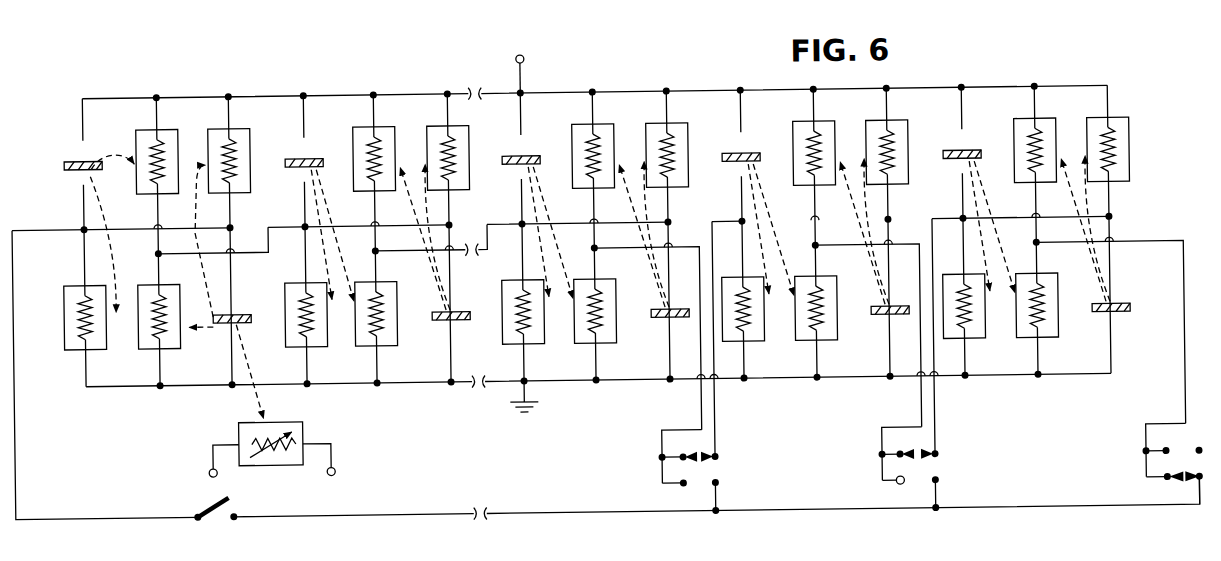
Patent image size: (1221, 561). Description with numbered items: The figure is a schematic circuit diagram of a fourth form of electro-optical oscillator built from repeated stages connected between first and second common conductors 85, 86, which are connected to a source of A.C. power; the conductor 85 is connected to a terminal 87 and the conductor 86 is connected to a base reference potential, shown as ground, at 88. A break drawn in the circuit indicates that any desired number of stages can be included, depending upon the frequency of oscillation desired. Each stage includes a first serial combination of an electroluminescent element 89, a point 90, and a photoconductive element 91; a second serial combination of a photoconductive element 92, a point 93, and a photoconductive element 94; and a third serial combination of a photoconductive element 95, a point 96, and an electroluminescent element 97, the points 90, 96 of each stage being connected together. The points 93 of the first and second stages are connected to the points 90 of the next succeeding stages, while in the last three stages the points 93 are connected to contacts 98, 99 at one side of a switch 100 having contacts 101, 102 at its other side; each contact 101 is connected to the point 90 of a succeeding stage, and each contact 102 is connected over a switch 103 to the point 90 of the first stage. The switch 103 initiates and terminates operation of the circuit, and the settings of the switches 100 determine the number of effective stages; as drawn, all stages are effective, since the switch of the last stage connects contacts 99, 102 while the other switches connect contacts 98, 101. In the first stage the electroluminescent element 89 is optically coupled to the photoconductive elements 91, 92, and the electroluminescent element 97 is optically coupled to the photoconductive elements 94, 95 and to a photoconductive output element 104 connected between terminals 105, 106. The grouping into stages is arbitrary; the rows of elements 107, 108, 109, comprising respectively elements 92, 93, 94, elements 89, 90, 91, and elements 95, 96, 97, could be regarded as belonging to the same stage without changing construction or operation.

The first common conductor 85 is at (704, 92).
The second common conductor 86 is at (412, 382).
The terminal 87 is at (528, 60).
The ground 88 is at (540, 399).
The electroluminescent element 89 is at (945, 157).
The point 90 is at (964, 223).
The photoconductive element 91 is at (959, 279).
The photoconductive element 92 is at (1021, 124).
The point 93 is at (1035, 248).
The photoconductive element 94 is at (1021, 345).
The photoconductive element 95 is at (1094, 124).
The point 96 is at (1110, 223).
The electroluminescent element 97 is at (1104, 318).
The contact 98 is at (1162, 457).
The contact 99 is at (1164, 486).
The switch 100 is at (1182, 482).
The contact 101 is at (1196, 456).
The contact 102 is at (1194, 518).
The switch 103 is at (196, 496).
The photoconductive output element 104 is at (266, 460).
The terminal 105 is at (207, 464).
The terminal 106 is at (333, 465).
The row of elements 107 is at (160, 90).
The row of elements 108 is at (307, 90).
The row of elements 109 is at (452, 90).